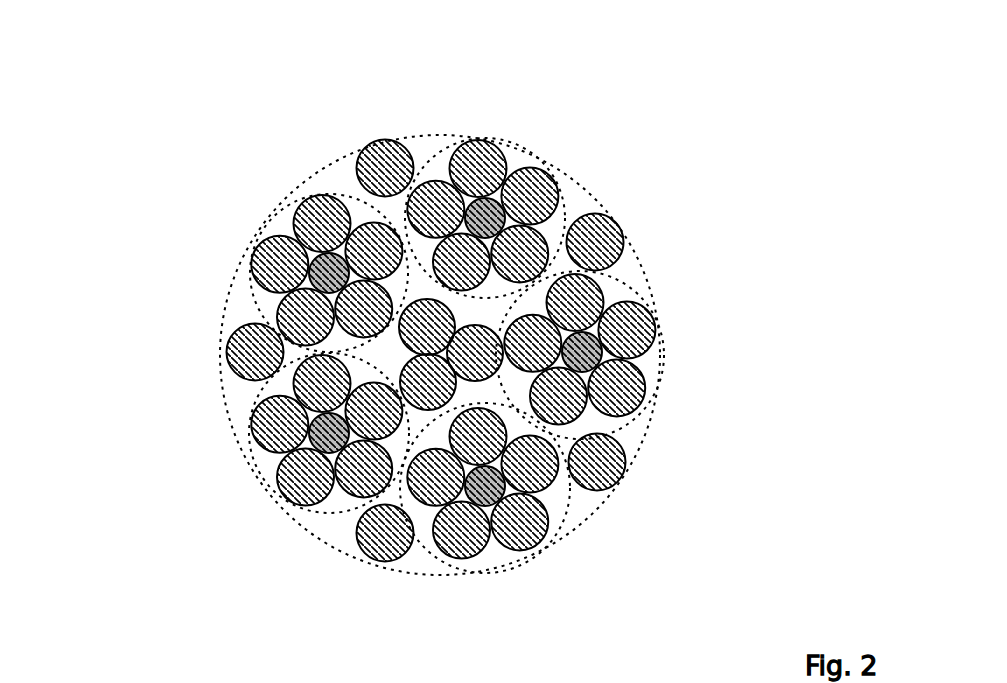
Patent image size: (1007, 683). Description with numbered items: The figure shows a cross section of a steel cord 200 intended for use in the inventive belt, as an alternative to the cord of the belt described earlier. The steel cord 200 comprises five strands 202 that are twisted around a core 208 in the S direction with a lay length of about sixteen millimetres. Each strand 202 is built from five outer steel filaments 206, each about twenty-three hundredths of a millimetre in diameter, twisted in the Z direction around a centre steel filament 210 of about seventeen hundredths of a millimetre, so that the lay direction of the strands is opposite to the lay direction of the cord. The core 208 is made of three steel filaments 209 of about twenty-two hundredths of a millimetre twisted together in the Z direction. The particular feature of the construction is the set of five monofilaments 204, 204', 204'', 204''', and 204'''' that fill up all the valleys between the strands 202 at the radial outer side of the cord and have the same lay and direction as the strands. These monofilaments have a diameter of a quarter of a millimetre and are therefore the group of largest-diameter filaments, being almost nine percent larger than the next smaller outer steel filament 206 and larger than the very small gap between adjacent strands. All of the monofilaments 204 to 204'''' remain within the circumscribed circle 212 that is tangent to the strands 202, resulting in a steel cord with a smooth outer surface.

The steel cord 200 is at (166, 123).
The strand 202 is at (620, 425).
The monofilament 204 is at (643, 487).
The monofilament 204' is at (643, 217).
The monofilament 204'' is at (432, 142).
The monofilament 204''' is at (194, 330).
The monofilament 204'''' is at (323, 557).
The outer steel filament 206 is at (633, 318).
The core 208 is at (382, 350).
The steel filament 209 is at (420, 377).
The centre steel filament 210 is at (585, 352).
The circumscribed circle 212 is at (337, 160).